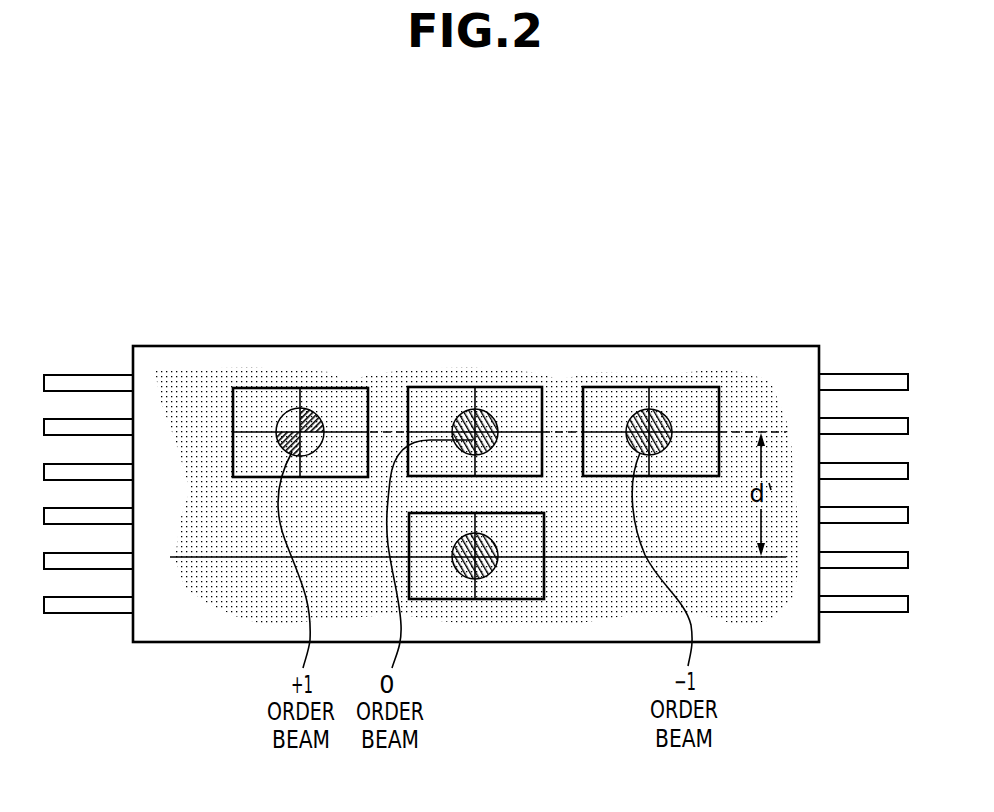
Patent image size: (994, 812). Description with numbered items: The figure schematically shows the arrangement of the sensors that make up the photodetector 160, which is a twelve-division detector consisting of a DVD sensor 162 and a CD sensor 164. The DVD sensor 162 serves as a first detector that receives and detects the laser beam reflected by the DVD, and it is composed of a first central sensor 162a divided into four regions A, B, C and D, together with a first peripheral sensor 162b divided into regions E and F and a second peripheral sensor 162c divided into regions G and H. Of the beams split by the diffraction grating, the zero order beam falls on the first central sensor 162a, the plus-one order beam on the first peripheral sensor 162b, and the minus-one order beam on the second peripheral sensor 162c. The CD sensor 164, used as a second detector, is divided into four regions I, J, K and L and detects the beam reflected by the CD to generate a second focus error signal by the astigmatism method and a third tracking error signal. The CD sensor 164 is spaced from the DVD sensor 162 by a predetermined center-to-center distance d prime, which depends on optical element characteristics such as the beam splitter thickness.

The photodetector 160 is at (830, 249).
The DVD sensor 162 is at (345, 280).
The first central sensor 162a is at (488, 387).
The first peripheral sensor 162b is at (342, 388).
The second peripheral sensor 162c is at (600, 387).
The CD sensor 164 is at (491, 600).